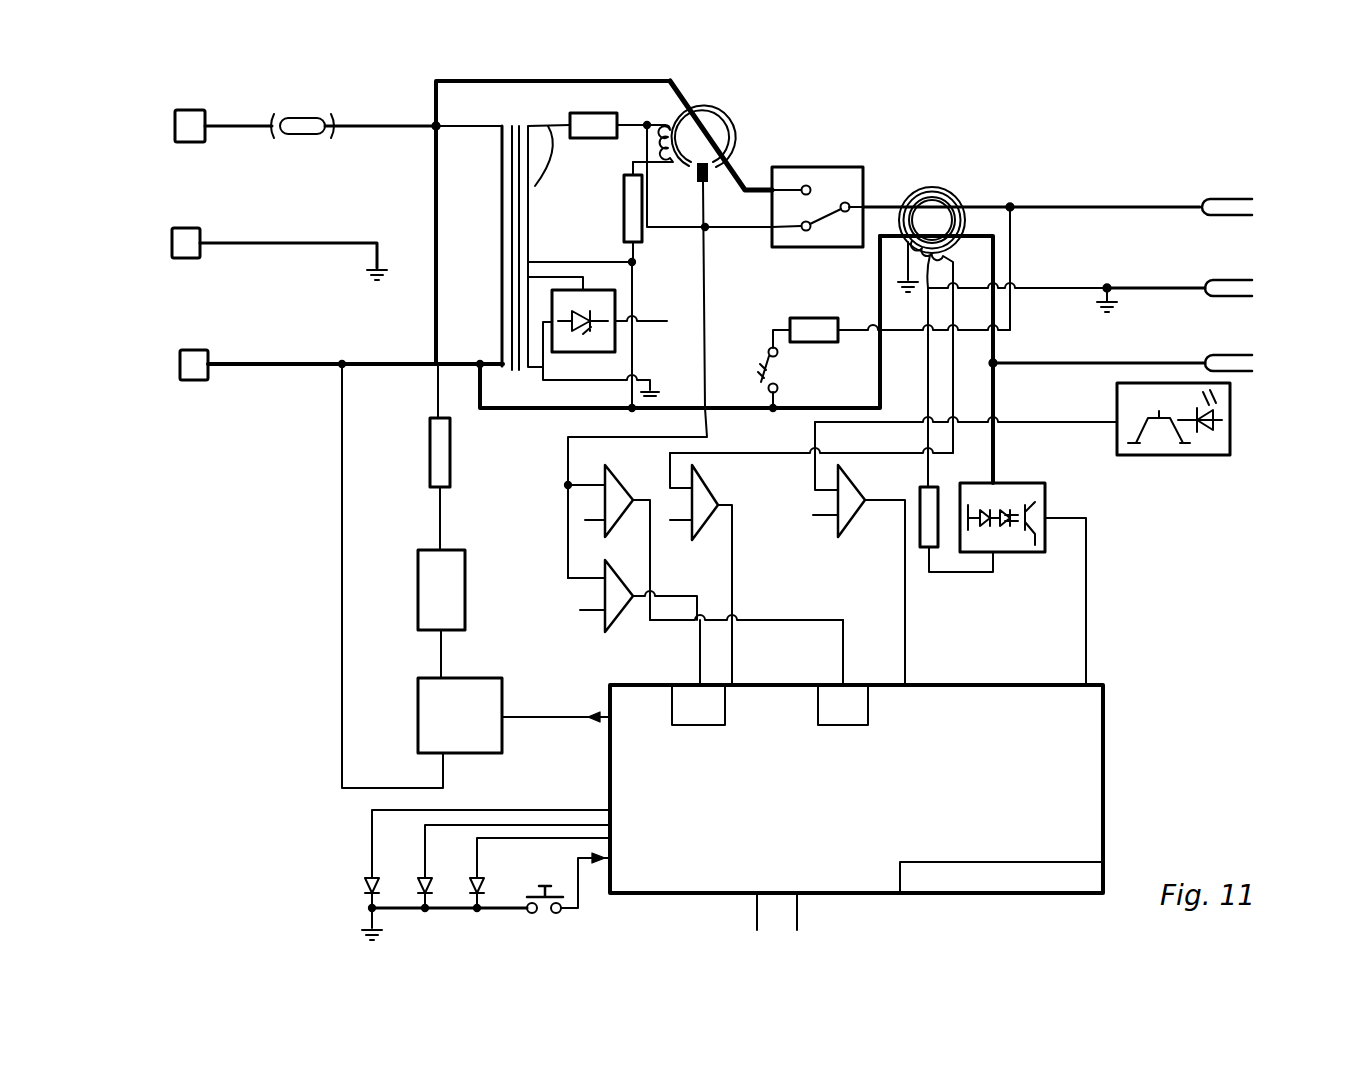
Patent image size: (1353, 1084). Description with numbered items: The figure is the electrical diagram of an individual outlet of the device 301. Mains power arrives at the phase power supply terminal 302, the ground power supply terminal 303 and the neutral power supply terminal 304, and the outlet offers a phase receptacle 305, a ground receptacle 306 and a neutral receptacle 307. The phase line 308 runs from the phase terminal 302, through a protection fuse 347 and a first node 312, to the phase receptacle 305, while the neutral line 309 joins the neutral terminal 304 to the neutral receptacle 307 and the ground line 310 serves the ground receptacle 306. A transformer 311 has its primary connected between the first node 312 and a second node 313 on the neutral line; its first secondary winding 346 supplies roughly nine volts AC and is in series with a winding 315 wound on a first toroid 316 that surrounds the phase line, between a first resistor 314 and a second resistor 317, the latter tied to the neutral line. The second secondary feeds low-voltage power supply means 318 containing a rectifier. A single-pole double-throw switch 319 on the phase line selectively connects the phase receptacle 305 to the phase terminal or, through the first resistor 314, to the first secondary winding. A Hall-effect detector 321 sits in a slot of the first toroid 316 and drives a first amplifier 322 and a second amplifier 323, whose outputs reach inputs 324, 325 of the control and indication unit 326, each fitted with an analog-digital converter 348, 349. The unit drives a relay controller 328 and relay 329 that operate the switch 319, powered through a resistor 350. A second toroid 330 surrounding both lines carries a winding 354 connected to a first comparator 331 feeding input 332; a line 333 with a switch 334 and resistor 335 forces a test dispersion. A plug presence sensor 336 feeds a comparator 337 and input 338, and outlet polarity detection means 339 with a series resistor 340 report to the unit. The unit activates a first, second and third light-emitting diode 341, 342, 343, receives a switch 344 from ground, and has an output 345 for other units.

The device 301 is at (1047, 158).
The phase power supply terminal 302 is at (176, 128).
The ground power supply terminal 303 is at (170, 240).
The neutral power supply terminal 304 is at (180, 365).
The phase receptacle 305 is at (1238, 197).
The ground receptacle 306 is at (1225, 278).
The neutral receptacle 307 is at (1225, 358).
The phase line 308 is at (477, 80).
The neutral line 309 is at (523, 415).
The ground line 310 is at (1145, 283).
The transformer 311 is at (497, 222).
The first node 312 is at (430, 130).
The second node 313 is at (478, 363).
The first resistor 314 is at (580, 140).
The winding 315 is at (687, 103).
The first toroid 316 is at (737, 130).
The second resistor 317 is at (628, 203).
The low-voltage power supply means 318 is at (610, 305).
The single-pole double-throw switch 319 is at (840, 175).
The Hall-effect detector 321 is at (733, 175).
The first amplifier 322 is at (612, 492).
The second amplifier 323 is at (620, 637).
The input 324 is at (823, 653).
The input 325 is at (746, 651).
The control and indication unit 326 is at (1095, 773).
The relay controller 328 is at (472, 695).
The relay 329 is at (460, 602).
The second toroid 330 is at (942, 187).
The first comparator 331 is at (703, 490).
The input 332 is at (759, 663).
The line 333 is at (1017, 256).
The switch 334 is at (755, 374).
The resistor 335 is at (813, 322).
The plug presence sensor 336 is at (1223, 432).
The comparator 337 is at (847, 517).
The input 338 is at (936, 663).
The outlet polarity detection means 339 is at (1022, 552).
The resistor 340 is at (925, 548).
The first light-emitting diode 341 is at (367, 880).
The second light-emitting diode 342 is at (425, 880).
The third light-emitting diode 343 is at (479, 880).
The switch 344 is at (545, 910).
The output 345 is at (776, 897).
The first secondary winding 346 is at (520, 138).
The protection fuse 347 is at (298, 135).
The analog-digital converter 348 is at (850, 720).
The analog-digital converter 349 is at (703, 718).
The resistor 350 is at (433, 445).
The winding 354 is at (927, 308).